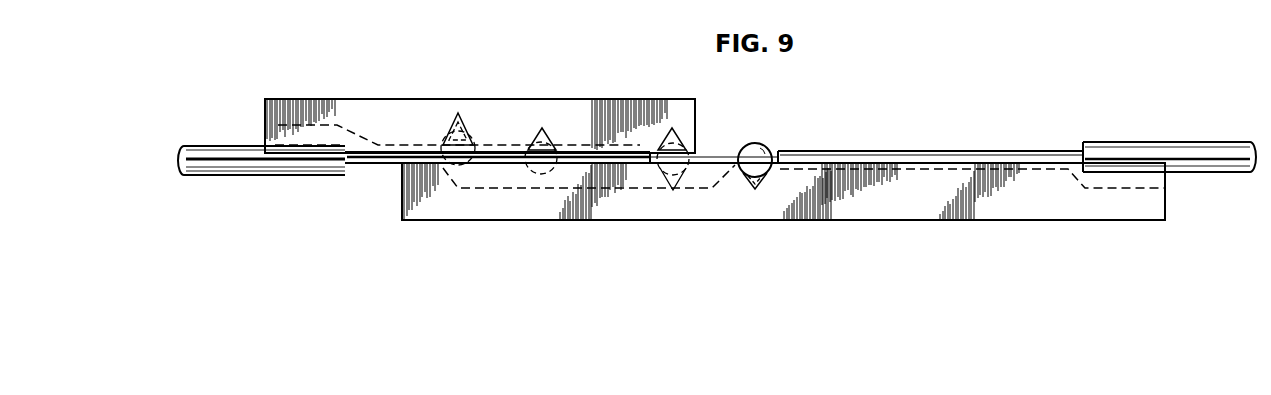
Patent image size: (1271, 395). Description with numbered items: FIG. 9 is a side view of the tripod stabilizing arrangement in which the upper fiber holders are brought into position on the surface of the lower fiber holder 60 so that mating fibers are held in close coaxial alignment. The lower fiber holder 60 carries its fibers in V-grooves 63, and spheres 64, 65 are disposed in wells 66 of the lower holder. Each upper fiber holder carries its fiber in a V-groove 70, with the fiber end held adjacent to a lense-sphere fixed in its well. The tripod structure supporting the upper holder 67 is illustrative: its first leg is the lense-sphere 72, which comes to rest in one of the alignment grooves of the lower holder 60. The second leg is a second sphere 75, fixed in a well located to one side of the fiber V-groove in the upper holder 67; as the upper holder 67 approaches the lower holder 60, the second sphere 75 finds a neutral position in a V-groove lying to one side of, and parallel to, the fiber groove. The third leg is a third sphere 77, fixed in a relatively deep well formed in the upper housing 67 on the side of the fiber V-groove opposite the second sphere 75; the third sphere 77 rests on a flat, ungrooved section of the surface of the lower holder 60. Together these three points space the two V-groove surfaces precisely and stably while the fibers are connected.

The lower fiber holder 60 is at (1218, 225).
The V-grooves 63 is at (1158, 180).
The sphere 64 is at (798, 144).
The sphere 65 is at (765, 147).
The wells 66 is at (767, 163).
The upper fiber holder 67 is at (695, 112).
The V-grooves 70 is at (265, 142).
The lense-sphere 72 is at (682, 168).
The second sphere 75 is at (533, 142).
The third sphere 77 is at (445, 142).